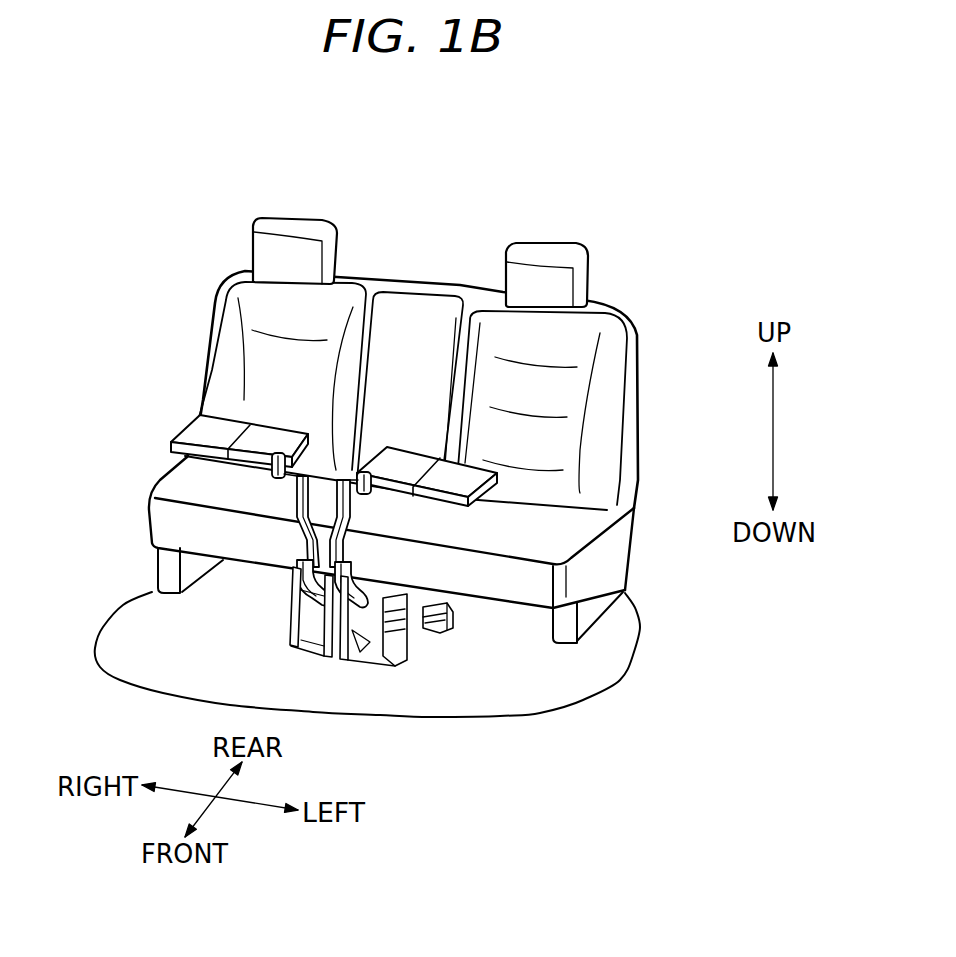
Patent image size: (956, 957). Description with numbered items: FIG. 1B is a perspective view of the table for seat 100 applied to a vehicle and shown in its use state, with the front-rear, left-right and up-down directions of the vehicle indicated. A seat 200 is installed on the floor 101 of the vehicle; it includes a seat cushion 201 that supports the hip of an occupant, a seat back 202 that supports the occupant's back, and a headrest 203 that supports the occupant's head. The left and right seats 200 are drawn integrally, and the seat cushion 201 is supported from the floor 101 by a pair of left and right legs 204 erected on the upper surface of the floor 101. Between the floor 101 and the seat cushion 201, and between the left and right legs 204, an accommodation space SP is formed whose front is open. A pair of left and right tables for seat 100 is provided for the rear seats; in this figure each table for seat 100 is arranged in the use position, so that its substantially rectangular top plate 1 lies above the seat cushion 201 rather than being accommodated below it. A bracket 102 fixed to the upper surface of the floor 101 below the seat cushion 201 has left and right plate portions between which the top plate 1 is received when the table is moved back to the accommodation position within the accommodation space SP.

The top plate 1 is at (321, 517).
The table for seat 100 is at (187, 414).
The floor 101 is at (577, 670).
The bracket 102 is at (310, 610).
The seat 200 is at (402, 408).
The seat cushion 201 is at (190, 500).
The seat back 202 is at (628, 374).
The headrest 203 is at (525, 250).
The leg 204 is at (162, 567).
The accommodation space SP is at (260, 578).